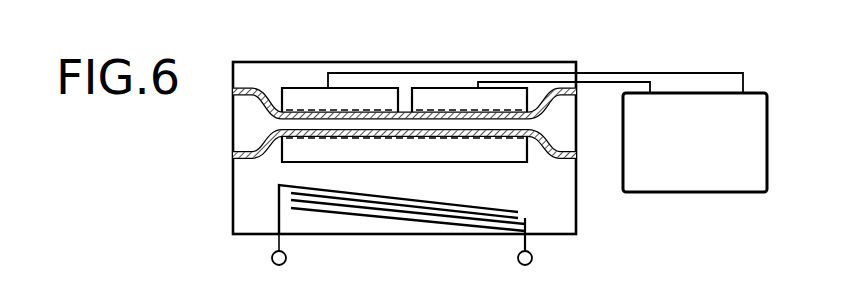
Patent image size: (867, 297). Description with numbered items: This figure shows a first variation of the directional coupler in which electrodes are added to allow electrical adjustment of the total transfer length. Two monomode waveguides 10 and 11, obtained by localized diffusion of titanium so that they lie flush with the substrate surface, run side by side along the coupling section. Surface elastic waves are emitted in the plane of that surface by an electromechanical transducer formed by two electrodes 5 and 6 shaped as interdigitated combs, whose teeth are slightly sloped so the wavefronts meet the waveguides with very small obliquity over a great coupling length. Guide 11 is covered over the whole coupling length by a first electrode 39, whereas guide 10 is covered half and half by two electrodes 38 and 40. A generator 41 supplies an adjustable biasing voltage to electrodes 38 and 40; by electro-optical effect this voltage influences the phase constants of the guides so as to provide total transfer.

The monomode waveguide 10 is at (259, 88).
The monomode waveguide 11 is at (260, 159).
The electrode 38 is at (312, 87).
The electrode 40 is at (440, 87).
The first electrode 39 is at (438, 163).
The electrode 5 is at (278, 210).
The electrode 6 is at (528, 219).
The generator 41 is at (700, 193).